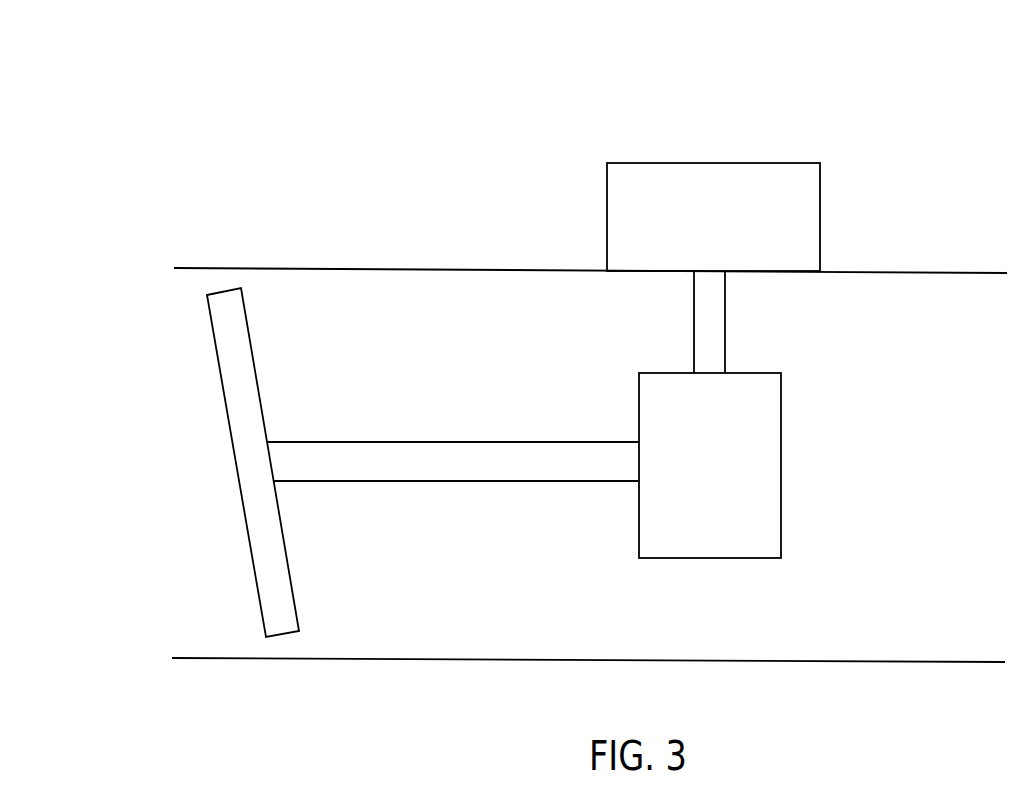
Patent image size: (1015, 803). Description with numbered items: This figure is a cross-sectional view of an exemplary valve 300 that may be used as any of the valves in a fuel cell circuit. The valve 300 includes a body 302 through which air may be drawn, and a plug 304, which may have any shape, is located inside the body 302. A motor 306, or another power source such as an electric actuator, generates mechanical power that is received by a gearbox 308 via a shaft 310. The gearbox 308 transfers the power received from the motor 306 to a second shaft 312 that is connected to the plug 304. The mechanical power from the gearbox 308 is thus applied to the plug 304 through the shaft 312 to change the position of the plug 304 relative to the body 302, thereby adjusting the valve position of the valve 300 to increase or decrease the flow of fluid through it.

The valve 300 is at (386, 92).
The body 302 is at (294, 268).
The plug 304 is at (230, 368).
The motor 306 is at (715, 175).
The gearbox 308 is at (760, 471).
The shaft 310 is at (705, 331).
The shaft 312 is at (480, 470).